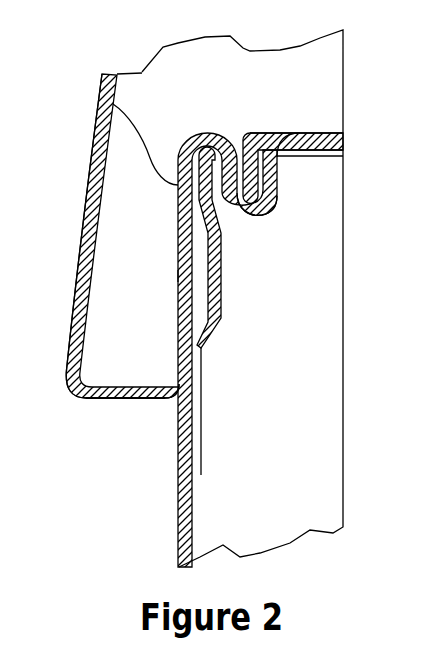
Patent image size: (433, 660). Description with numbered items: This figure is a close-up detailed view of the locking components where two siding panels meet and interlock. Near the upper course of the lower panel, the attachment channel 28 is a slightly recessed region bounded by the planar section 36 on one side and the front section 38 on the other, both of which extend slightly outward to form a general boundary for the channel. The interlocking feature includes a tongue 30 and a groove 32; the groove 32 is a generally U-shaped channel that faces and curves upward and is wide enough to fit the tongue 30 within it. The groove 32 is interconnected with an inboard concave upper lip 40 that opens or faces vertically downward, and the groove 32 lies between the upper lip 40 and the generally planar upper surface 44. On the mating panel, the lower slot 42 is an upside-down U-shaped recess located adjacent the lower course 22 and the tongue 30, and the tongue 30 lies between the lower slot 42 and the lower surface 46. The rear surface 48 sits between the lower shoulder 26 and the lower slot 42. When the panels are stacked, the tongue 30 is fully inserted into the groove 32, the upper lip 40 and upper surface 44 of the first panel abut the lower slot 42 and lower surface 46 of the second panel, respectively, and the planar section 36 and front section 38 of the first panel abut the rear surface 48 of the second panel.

The lower course 22 is at (95, 152).
The lower shoulder 26 is at (132, 390).
The attachment channel 28 is at (229, 286).
The tongue 30 is at (256, 134).
The groove 32 is at (258, 212).
The planar section 36 is at (200, 372).
The front section 38 is at (113, 104).
The upper lip 40 is at (218, 232).
The lower slot 42 is at (213, 135).
The upper surface 44 is at (314, 152).
The lower surface 46 is at (290, 133).
The rear surface 48 is at (178, 279).